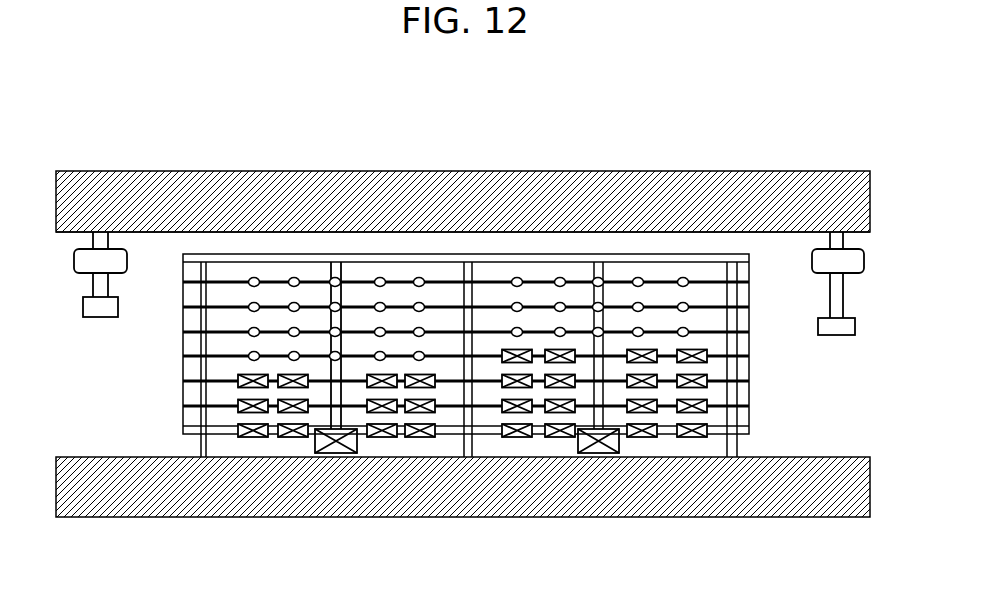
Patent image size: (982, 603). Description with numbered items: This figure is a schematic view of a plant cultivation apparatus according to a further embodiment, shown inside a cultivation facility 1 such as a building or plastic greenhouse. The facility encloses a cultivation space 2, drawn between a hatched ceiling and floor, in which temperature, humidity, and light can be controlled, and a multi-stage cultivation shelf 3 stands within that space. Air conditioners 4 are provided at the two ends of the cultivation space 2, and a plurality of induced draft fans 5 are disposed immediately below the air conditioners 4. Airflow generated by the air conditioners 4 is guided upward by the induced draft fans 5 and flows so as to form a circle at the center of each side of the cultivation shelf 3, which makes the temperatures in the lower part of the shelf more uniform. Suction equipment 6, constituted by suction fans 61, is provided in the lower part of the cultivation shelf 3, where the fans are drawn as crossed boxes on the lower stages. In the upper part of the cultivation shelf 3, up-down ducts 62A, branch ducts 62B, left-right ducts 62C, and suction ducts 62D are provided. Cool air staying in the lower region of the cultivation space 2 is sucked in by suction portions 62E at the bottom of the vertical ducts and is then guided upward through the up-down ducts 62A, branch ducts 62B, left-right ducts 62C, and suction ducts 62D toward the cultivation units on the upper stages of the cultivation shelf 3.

The cultivation facility 1 is at (700, 202).
The cultivation space 2 is at (642, 237).
The cultivation shelf 3 is at (393, 253).
The air conditioner 4 is at (83, 265).
The induced draft fan 5 is at (100, 317).
The suction equipment 6 is at (403, 275).
The suction fan 61 is at (675, 378).
The up-down duct 62A is at (335, 402).
The branch duct 62B is at (357, 282).
The left-right duct 62C is at (328, 277).
The suction duct 62D is at (272, 278).
The suction portion 62E is at (335, 450).